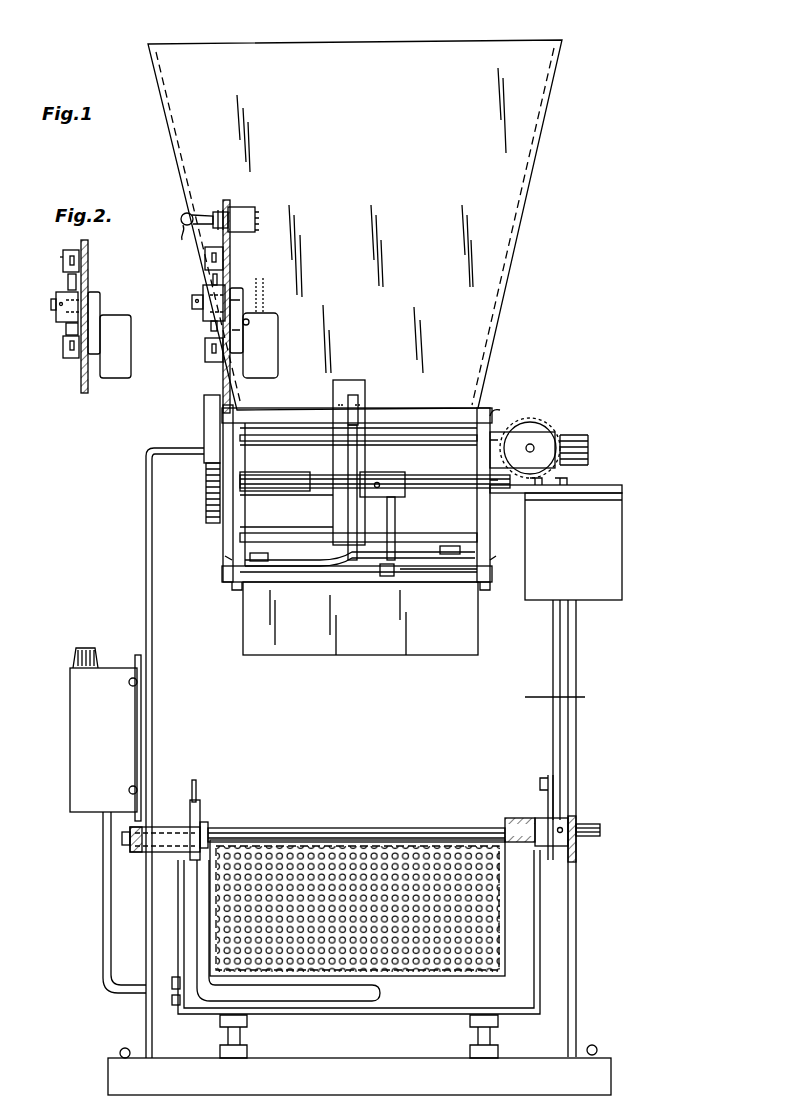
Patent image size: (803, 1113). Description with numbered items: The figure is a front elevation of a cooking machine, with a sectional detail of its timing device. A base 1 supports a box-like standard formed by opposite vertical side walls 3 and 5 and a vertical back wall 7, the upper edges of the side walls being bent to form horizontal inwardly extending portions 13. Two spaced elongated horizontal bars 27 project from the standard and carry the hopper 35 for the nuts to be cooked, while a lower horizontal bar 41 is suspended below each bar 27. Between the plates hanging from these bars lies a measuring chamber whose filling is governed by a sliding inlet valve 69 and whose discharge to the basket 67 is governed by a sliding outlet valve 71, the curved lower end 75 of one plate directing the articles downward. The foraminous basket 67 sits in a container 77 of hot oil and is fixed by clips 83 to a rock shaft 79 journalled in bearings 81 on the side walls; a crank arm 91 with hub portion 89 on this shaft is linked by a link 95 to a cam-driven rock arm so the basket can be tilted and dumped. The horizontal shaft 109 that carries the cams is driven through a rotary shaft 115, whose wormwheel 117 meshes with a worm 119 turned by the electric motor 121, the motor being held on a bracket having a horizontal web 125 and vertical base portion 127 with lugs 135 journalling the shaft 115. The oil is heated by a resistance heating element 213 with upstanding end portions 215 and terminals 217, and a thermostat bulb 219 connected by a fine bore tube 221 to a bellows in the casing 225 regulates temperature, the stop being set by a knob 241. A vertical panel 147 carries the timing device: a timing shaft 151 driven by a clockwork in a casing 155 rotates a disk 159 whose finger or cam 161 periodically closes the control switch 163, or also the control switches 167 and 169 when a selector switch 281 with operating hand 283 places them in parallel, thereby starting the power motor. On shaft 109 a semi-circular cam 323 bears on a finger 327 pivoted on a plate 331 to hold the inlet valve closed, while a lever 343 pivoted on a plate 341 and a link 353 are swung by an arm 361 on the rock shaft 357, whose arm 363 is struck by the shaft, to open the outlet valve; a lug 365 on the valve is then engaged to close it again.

In FIG. 1, the base 1 is at (605, 1068).
In FIG. 1, the vertical side wall 3 is at (577, 646).
In FIG. 1, the vertical side wall 5 is at (146, 570).
In FIG. 1, the vertical back wall 7 is at (563, 696).
In FIG. 1, the horizontal inwardly extending portion 13 is at (172, 440).
In FIG. 1, the elongated horizontal bar 27 is at (232, 422).
In FIG. 1, the hopper 35 is at (500, 308).
In FIG. 1, the elongated horizontal bar 41 is at (235, 565).
In FIG. 1, the basket 67 is at (498, 925).
In FIG. 1, the sliding inlet valve 69 is at (416, 430).
In FIG. 1, the sliding outlet valve 71 is at (445, 575).
In FIG. 1, the lower end of plate 75 is at (390, 645).
In FIG. 1, the container 77 is at (541, 940).
In FIG. 1, the rock shaft 79 is at (322, 828).
In FIG. 1, the bearing 81 is at (135, 853).
In FIG. 1, the clip 83 is at (203, 822).
In FIG. 1, the hub portion 89 is at (555, 846).
In FIG. 1, the crank arm 91 is at (548, 802).
In FIG. 1, the link 95 is at (553, 728).
In FIG. 1, the horizontal shaft 109 is at (284, 474).
In FIG. 1, the rotary shaft 115 is at (534, 446).
In FIG. 1, the wormwheel 117 is at (548, 430).
In FIG. 1, the worm 119 is at (586, 440).
In FIG. 1, the electric motor 121 is at (623, 524).
In FIG. 1, the horizontal web 125 is at (622, 485).
In FIG. 1, the vertically extending base portion 127 is at (492, 425).
In FIG. 1, the lugs 135 is at (528, 430).
In FIG. 2, the vertical panel 147 is at (89, 250).
In FIG. 1, the vertical panel 147 is at (231, 278).
In FIG. 2, the timing shaft 151 is at (56, 308).
In FIG. 1, the timing shaft 151 is at (192, 302).
In FIG. 2, the casing 155 is at (118, 357).
In FIG. 1, the casing 155 is at (262, 333).
In FIG. 2, the disk 159 is at (66, 330).
In FIG. 2, the finger or cam 161 is at (68, 282).
In FIG. 1, the control switch 163 is at (211, 325).
In FIG. 2, the control switch 167 is at (66, 251).
In FIG. 1, the control switch 167 is at (207, 264).
In FIG. 2, the control switch 169 is at (70, 358).
In FIG. 1, the control switch 169 is at (208, 362).
In FIG. 1, the resistance heating element 213 is at (428, 1014).
In FIG. 1, the upstanding end portion 215 is at (187, 818).
In FIG. 1, the terminal 217 is at (197, 790).
In FIG. 1, the bulb 219 is at (382, 992).
In FIG. 1, the fine bore tube 221 is at (103, 934).
In FIG. 1, the casing 225 is at (78, 742).
In FIG. 1, the knob 241 is at (85, 648).
In FIG. 1, the selector switch 281 is at (245, 208).
In FIG. 1, the operating hand 283 is at (184, 235).
In FIG. 1, the semi-circular cam 323 is at (345, 456).
In FIG. 1, the finger 327 is at (366, 396).
In FIG. 1, the plate 331 is at (305, 534).
In FIG. 1, the plate 341 is at (358, 578).
In FIG. 1, the lever 343 is at (430, 555).
In FIG. 1, the link 353 is at (328, 556).
In FIG. 1, the rock shaft 357 is at (282, 492).
In FIG. 1, the arm 361 is at (348, 508).
In FIG. 1, the arm 363 is at (396, 514).
In FIG. 1, the lug 365 is at (387, 577).